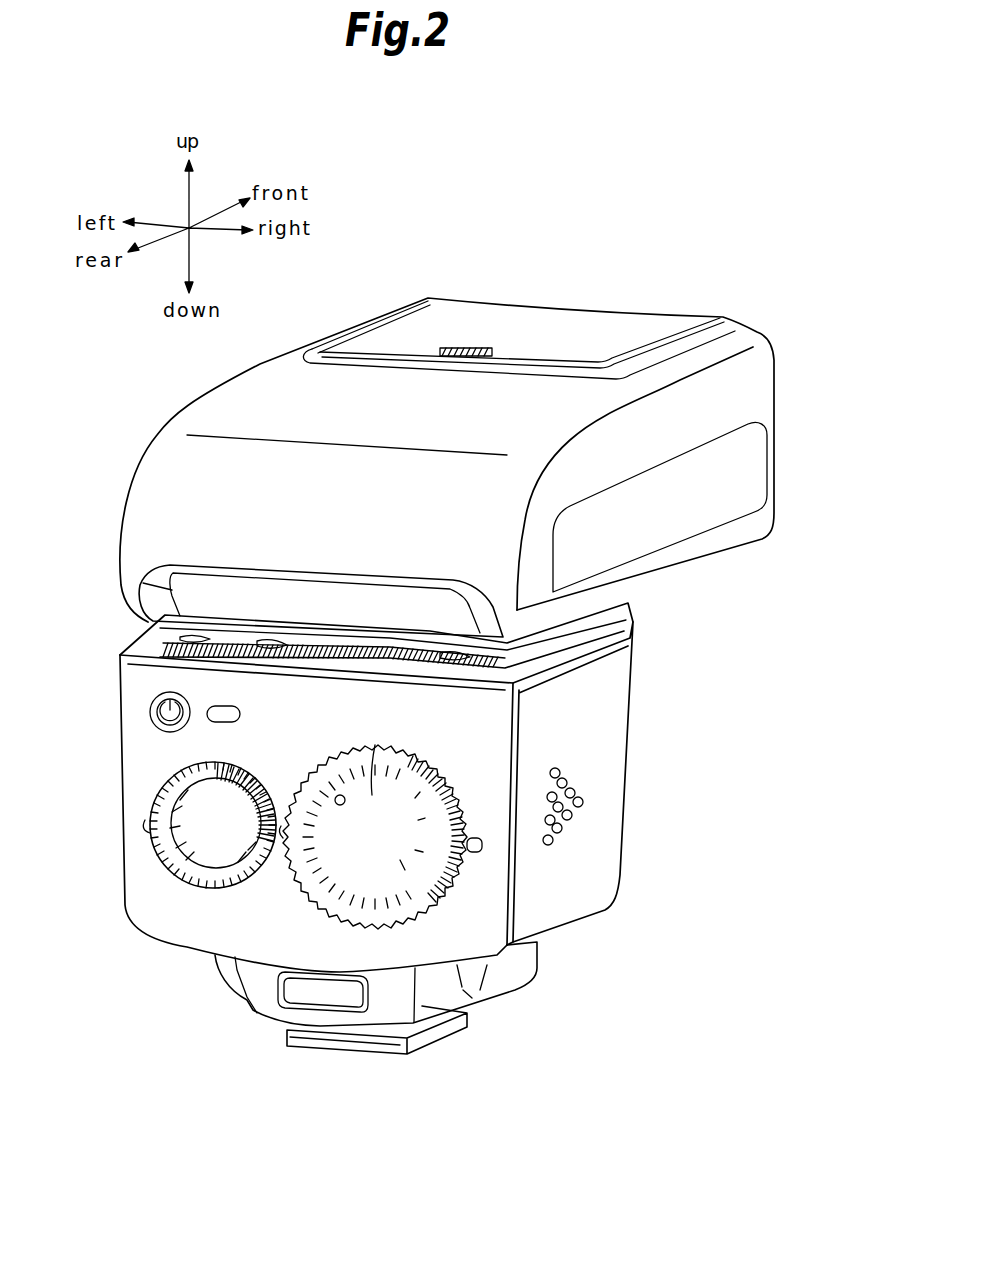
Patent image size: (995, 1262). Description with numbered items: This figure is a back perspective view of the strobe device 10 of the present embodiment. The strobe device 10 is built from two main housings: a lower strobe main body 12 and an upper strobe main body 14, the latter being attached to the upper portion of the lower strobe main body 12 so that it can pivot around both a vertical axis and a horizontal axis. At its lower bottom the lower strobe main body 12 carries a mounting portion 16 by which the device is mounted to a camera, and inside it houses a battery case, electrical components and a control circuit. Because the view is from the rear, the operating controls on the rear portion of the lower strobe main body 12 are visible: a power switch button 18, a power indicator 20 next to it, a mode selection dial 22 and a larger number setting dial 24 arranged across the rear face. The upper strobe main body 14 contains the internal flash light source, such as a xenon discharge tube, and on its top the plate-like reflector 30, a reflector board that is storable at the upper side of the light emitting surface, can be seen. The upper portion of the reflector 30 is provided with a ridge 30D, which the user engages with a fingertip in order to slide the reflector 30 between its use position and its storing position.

The strobe device 10 is at (110, 648).
The lower strobe main body 12 is at (150, 762).
The upper strobe main body 14 is at (188, 470).
The mounting portion 16 is at (361, 1050).
The power switch button 18 is at (150, 705).
The power indicator 20 is at (238, 712).
The mode selection dial 22 is at (155, 850).
The number setting dial 24 is at (362, 762).
The reflector 30 is at (627, 325).
The ridge 30D is at (468, 348).